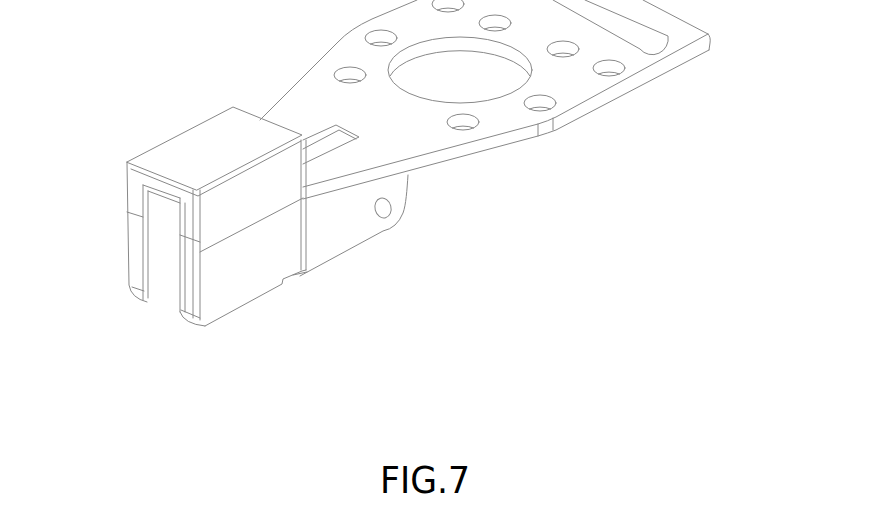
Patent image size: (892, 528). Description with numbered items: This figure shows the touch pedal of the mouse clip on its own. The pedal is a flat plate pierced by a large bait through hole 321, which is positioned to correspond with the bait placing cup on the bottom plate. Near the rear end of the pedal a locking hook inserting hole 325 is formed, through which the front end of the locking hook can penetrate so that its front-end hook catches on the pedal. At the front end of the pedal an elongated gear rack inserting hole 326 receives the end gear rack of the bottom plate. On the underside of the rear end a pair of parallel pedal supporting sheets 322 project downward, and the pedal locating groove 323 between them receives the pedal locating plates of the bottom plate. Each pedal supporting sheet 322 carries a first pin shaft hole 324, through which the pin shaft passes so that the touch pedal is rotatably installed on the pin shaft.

The bait through hole 321 is at (480, 78).
The pedal supporting sheets 322 is at (325, 226).
The pedal locating groove 323 is at (165, 273).
The first pin shaft holes 324 is at (388, 211).
The locking hook inserting hole 325 is at (321, 140).
The gear rack inserting hole 326 is at (623, 37).